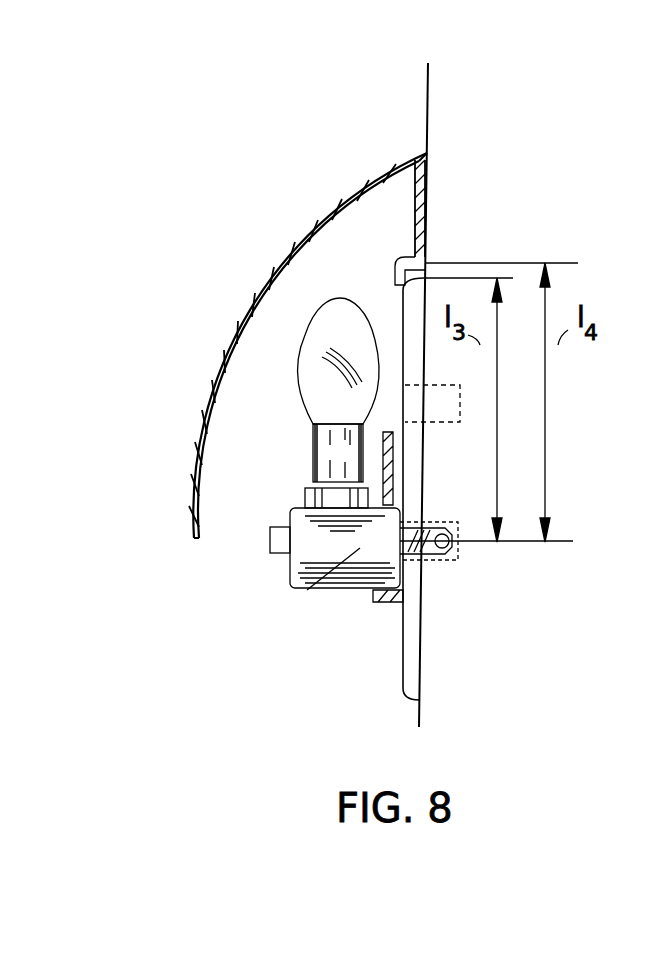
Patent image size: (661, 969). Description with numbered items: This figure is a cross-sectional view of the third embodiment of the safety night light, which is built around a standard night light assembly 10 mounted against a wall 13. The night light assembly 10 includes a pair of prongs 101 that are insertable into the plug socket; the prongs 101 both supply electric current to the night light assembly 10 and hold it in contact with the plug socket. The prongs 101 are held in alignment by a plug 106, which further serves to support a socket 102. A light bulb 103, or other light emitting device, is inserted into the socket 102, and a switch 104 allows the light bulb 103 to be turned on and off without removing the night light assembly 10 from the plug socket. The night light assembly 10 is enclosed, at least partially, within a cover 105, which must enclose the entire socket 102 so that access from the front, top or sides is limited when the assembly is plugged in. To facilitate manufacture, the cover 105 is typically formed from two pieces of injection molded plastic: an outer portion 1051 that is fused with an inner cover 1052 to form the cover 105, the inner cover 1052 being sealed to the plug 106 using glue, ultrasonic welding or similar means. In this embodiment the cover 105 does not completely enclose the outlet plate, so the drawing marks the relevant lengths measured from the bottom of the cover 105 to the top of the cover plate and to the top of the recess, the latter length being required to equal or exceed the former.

The night light assembly 10 is at (294, 423).
The wall 13 is at (420, 716).
The prongs 101 is at (440, 522).
The socket 102 is at (313, 450).
The light bulb 103 is at (352, 327).
The switch 104 is at (290, 550).
The cover 105 is at (350, 361).
The plug 106 is at (307, 590).
The outer portion of cover 1051 is at (355, 185).
The inner cover 1052 is at (422, 212).